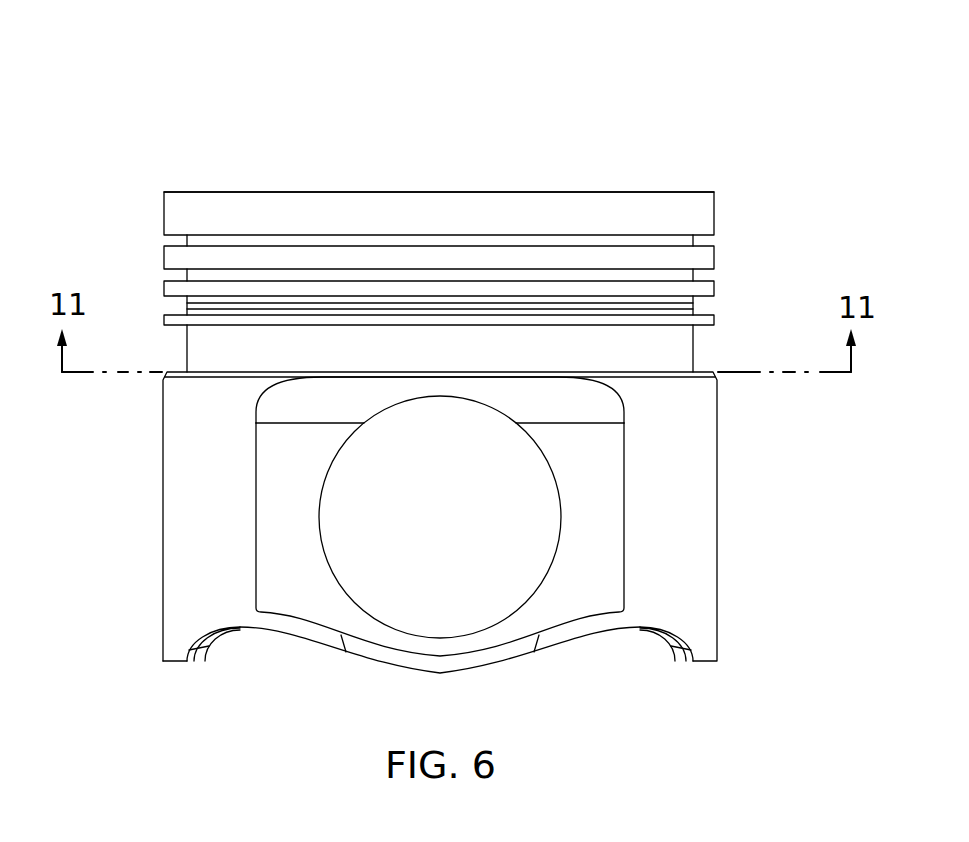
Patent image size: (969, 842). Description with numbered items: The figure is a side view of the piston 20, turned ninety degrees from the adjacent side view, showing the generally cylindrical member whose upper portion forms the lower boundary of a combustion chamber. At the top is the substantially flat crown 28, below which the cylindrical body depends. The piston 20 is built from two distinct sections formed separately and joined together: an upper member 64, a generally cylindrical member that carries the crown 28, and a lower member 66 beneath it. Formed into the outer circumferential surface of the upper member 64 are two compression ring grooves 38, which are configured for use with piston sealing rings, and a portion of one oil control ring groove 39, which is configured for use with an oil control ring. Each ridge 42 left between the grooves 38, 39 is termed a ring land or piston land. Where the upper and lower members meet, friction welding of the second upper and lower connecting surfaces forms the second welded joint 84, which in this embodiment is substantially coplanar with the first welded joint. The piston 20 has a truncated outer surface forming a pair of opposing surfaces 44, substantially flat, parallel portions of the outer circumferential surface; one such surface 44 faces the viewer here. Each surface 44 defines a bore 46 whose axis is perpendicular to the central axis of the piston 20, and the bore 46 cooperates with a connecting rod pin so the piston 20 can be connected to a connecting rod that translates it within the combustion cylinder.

The piston 20 is at (454, 364).
The crown 28 is at (485, 191).
The compression ring groove 38 is at (704, 241).
The oil control ring groove 39 is at (700, 306).
The ridge 42 is at (716, 248).
The opposing surface 44 is at (440, 536).
The bore 46 is at (440, 665).
The upper member 64 is at (439, 154).
The lower member 66 is at (482, 516).
The second welded joint 84 is at (187, 305).